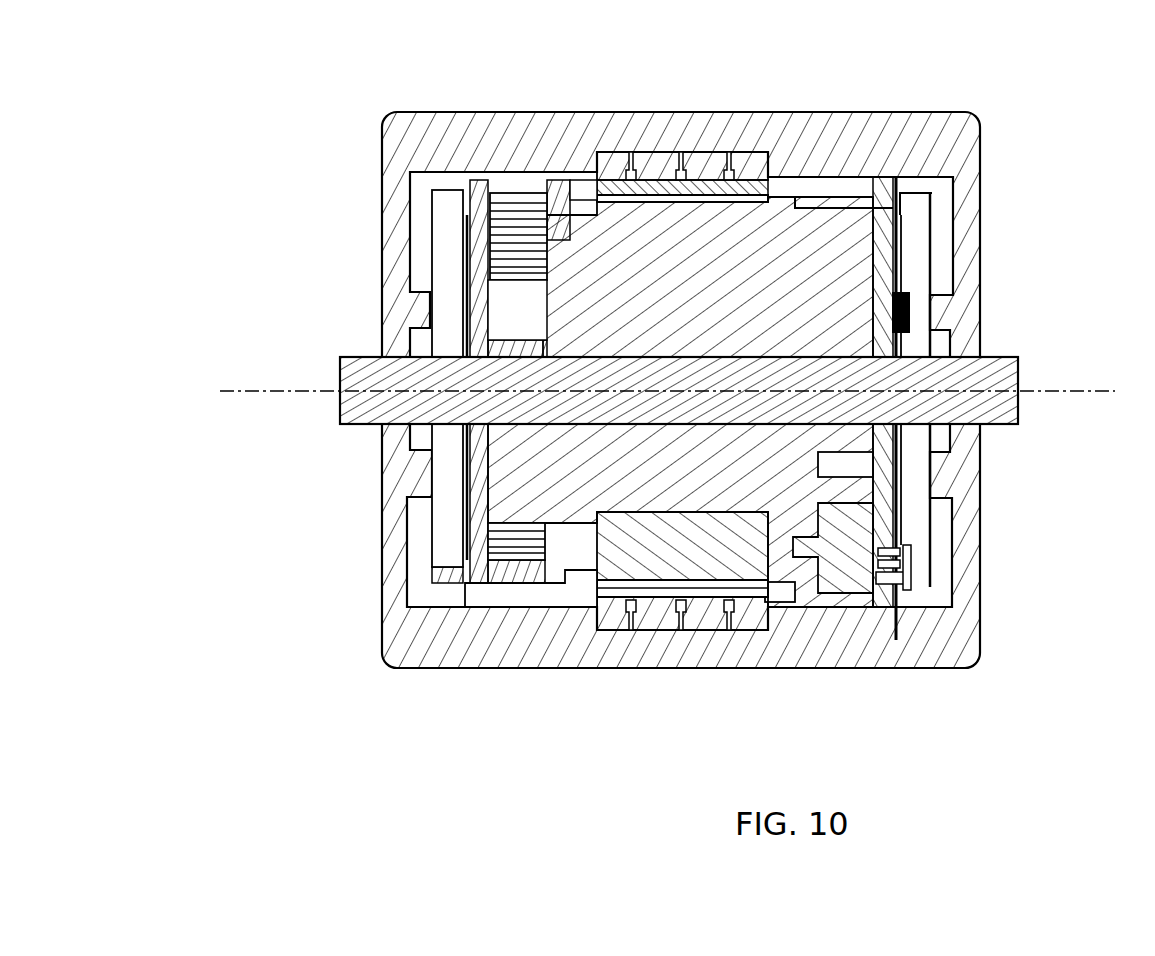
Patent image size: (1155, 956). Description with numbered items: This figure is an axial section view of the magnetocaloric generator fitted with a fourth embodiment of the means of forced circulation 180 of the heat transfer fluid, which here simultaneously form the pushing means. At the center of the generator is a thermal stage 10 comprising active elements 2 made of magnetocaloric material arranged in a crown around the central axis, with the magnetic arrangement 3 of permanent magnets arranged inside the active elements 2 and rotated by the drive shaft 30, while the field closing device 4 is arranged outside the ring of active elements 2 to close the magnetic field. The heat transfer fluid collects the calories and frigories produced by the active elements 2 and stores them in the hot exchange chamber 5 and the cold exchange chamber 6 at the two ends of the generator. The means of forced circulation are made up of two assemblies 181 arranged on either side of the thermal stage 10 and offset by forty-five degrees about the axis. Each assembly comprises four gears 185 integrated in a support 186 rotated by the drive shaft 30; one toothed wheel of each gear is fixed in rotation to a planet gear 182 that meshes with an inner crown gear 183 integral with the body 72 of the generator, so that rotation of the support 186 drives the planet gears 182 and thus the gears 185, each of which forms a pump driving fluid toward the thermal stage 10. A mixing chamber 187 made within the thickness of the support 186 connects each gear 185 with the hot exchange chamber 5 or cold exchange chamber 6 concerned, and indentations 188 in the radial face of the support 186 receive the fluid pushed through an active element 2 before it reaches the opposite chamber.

The active elements 2 is at (680, 160).
The magnetic arrangement 3 is at (733, 276).
The field closing device 4 is at (708, 160).
The hot exchange chamber 5 is at (443, 292).
The cold exchange chamber 6 is at (915, 263).
The thermal stage 10 is at (597, 727).
The drive shaft 30 is at (1053, 393).
The body 72 is at (580, 128).
The means of forced circulation 180 is at (877, 714).
The assemblies 181 is at (492, 710).
The planet gear 182 is at (905, 575).
The inner crown gear 183 is at (912, 588).
The gears 185 is at (515, 215).
The support 186 is at (908, 215).
The mixing chamber 187 is at (483, 272).
The indentations 188 is at (866, 195).